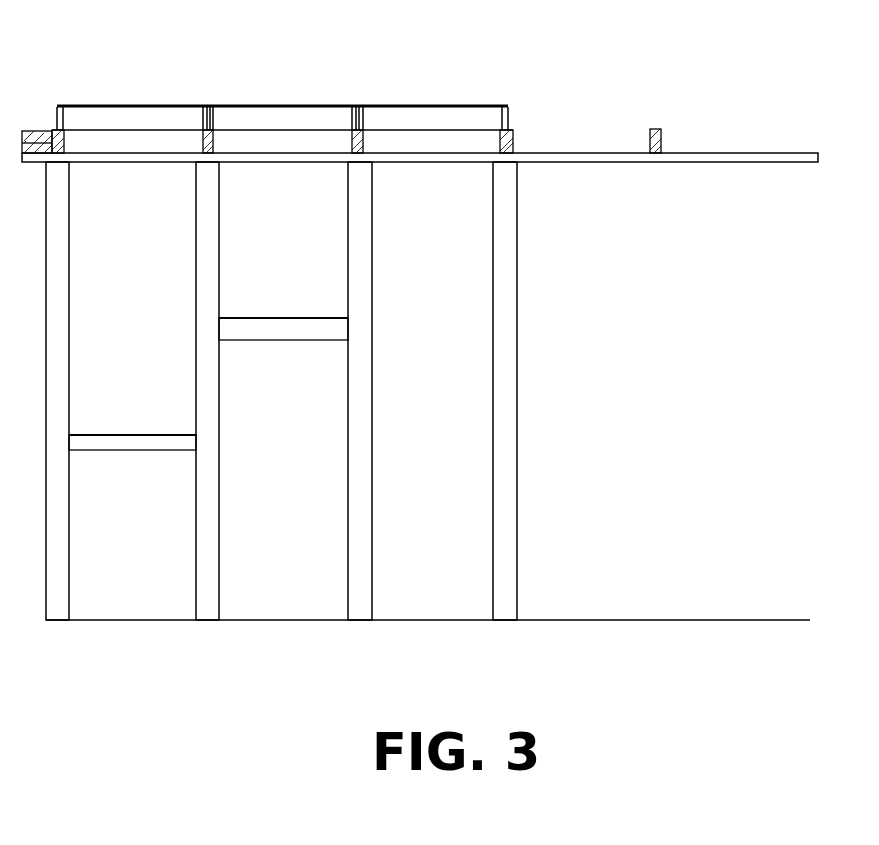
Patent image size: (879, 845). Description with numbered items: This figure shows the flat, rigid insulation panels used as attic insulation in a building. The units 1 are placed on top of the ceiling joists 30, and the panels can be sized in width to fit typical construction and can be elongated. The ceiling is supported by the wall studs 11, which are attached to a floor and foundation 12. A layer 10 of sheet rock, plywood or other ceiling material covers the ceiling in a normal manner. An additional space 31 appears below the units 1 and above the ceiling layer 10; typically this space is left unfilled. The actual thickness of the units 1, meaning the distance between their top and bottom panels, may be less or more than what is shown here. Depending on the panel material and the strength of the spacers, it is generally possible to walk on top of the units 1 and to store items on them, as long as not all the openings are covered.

The units 1 is at (138, 118).
The additional space 31 is at (255, 137).
The layer of ceiling material 10 is at (603, 153).
The ceiling joists 30 is at (655, 130).
The wall studs 11 is at (508, 380).
The floor and foundation 12 is at (703, 619).